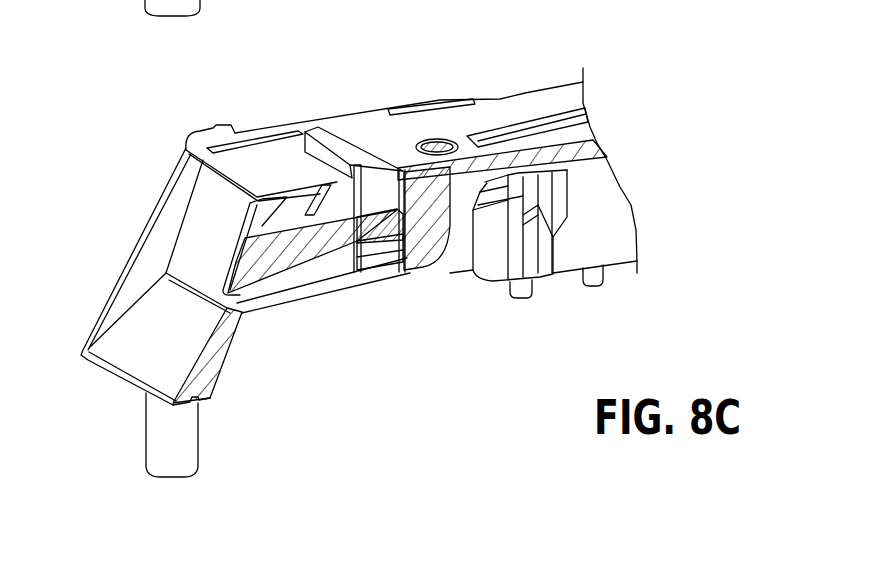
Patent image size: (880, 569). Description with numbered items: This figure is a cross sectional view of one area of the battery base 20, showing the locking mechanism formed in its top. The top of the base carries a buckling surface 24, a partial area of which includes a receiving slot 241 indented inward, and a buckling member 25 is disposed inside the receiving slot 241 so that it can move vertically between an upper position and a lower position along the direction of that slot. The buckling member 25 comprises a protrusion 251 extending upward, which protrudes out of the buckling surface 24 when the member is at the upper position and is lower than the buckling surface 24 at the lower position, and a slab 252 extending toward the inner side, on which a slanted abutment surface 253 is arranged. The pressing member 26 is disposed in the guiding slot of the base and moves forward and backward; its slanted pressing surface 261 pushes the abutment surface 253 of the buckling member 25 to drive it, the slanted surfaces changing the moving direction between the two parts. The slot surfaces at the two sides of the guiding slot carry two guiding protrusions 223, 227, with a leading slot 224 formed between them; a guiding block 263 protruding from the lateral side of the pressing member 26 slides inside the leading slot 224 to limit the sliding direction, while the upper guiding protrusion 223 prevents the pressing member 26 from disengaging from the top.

The battery base 20 is at (207, 362).
The buckling surface 24 is at (260, 157).
The buckling member 25 is at (446, 66).
The pressing member 26 is at (240, 268).
The guiding protrusion 223 is at (320, 185).
The leading slot 224 is at (313, 255).
The guiding protrusion 227 is at (335, 275).
The receiving slot 241 is at (390, 260).
The protrusion 251 is at (318, 131).
The slab 252 is at (424, 142).
The abutment surface 253 is at (362, 180).
The pressing surface 261 is at (300, 204).
The guiding block 263 is at (320, 240).